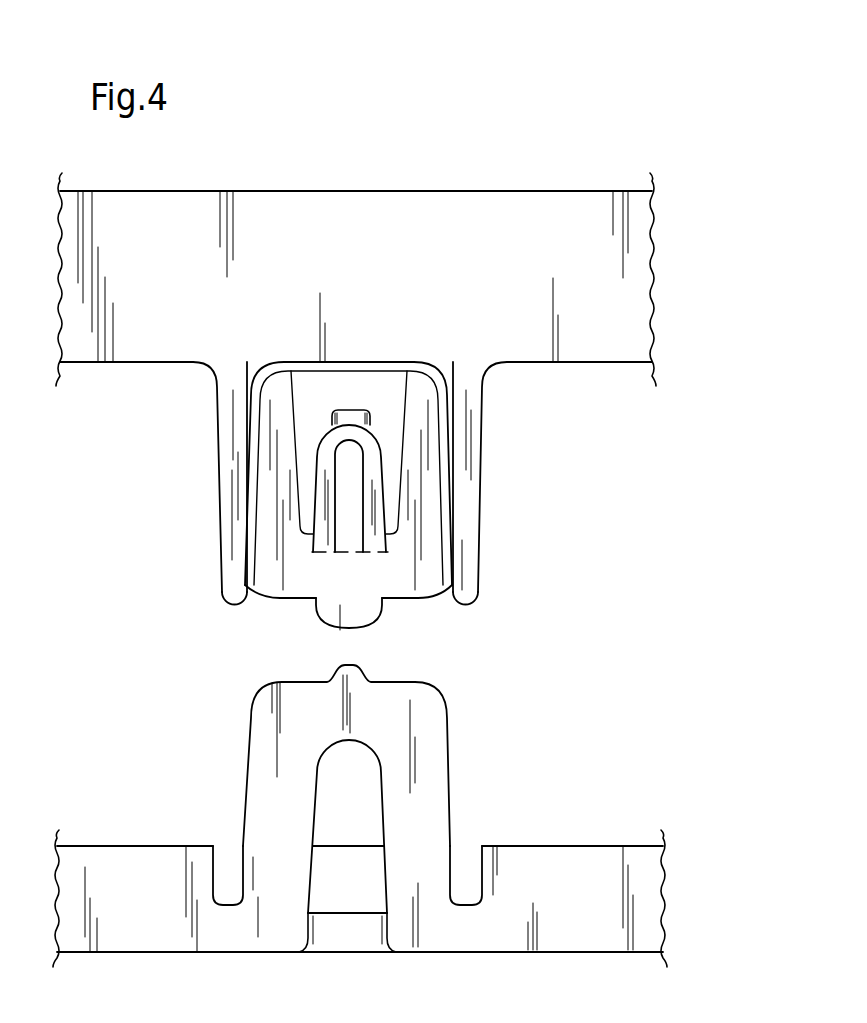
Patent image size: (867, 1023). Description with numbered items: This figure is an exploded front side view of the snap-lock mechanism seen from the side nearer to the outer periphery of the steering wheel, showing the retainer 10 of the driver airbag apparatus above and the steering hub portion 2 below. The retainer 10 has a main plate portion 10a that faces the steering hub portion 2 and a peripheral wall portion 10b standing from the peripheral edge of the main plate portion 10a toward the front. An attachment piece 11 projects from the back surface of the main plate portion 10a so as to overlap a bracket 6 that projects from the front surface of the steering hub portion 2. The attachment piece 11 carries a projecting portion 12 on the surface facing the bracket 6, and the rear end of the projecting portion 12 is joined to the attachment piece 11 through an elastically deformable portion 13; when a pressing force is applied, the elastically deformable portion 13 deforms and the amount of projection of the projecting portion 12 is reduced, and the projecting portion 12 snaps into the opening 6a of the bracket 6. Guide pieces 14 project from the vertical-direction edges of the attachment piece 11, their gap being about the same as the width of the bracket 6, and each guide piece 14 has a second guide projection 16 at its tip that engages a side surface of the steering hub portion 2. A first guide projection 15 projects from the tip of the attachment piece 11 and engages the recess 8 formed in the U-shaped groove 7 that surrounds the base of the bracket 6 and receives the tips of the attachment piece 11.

The steering hub portion 2 is at (597, 845).
The bracket 6 is at (447, 743).
The opening 6a is at (336, 771).
The groove 7 is at (217, 865).
The recess 8 is at (373, 937).
The retainer 10 is at (498, 168).
The main plate portion 10a is at (93, 365).
The peripheral wall portion 10b is at (315, 206).
The attachment piece 11 is at (267, 600).
The projecting portion 12 is at (367, 435).
The elastically deformable portion 13 is at (315, 517).
The guide piece 14 is at (223, 469).
The first guide projection 15 is at (365, 630).
The second guide projection 16 is at (230, 608).